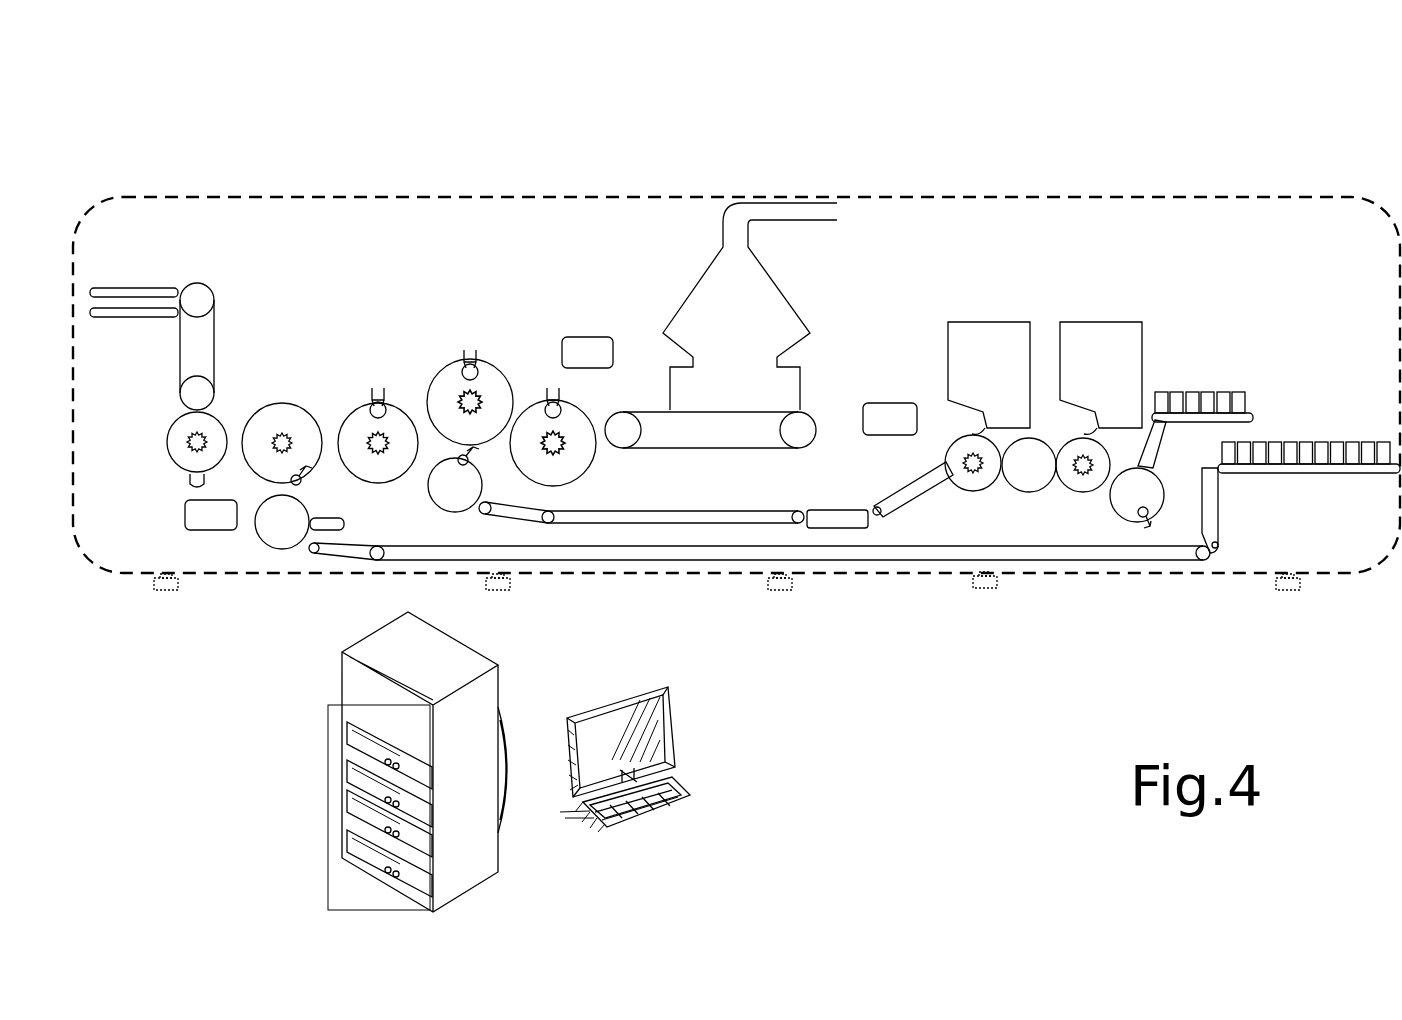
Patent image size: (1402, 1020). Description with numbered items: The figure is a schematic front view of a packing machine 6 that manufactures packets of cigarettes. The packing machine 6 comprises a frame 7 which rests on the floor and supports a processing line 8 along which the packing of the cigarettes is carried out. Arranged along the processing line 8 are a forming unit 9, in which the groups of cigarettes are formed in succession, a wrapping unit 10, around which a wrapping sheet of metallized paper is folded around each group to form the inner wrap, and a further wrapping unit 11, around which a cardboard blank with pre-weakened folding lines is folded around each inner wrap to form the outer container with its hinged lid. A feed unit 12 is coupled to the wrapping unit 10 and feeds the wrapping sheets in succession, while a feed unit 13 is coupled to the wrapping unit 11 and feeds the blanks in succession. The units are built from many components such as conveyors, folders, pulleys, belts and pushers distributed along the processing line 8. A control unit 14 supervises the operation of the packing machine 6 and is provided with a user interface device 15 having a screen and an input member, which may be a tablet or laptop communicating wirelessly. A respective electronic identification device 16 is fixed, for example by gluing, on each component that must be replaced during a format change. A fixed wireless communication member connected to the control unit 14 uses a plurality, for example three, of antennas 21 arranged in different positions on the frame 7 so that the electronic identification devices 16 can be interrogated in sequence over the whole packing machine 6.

The packing machine 6 is at (1193, 157).
The frame 7 is at (1233, 573).
The processing line 8 is at (350, 131).
The forming unit 9 is at (673, 183).
The wrapping unit 10 is at (472, 322).
The wrapping unit 11 is at (281, 358).
The feed unit 12 is at (1033, 250).
The feed unit 13 is at (738, 605).
The control unit 14 is at (293, 730).
The user interface device 15 is at (725, 789).
The electronic identification device 16 is at (196, 443).
The antenna 21 is at (208, 521).